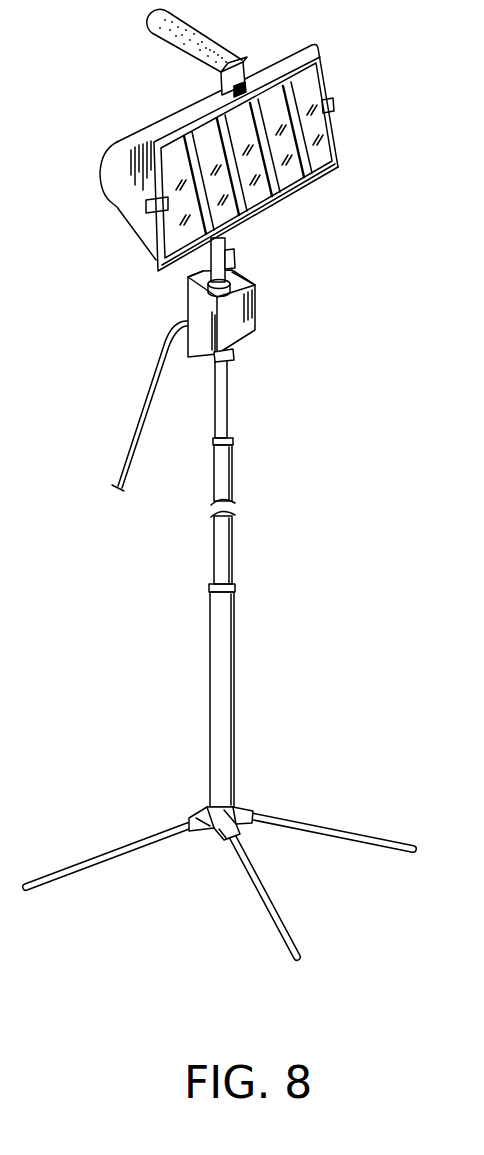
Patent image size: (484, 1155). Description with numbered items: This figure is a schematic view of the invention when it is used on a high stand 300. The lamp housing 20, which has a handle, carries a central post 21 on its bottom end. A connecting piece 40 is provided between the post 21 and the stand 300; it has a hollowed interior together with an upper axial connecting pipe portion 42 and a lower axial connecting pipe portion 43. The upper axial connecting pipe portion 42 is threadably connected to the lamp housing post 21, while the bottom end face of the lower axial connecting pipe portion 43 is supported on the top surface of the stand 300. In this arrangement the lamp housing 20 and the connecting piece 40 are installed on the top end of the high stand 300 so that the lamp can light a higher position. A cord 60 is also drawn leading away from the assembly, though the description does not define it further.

The lamp housing 20 is at (125, 203).
The central post 21 is at (233, 253).
The connecting piece 40 is at (256, 326).
The upper axial connecting pipe portion 42 is at (256, 288).
The lower axial connecting pipe portion 43 is at (232, 357).
The power cord 60 is at (141, 442).
The high stand 300 is at (289, 822).